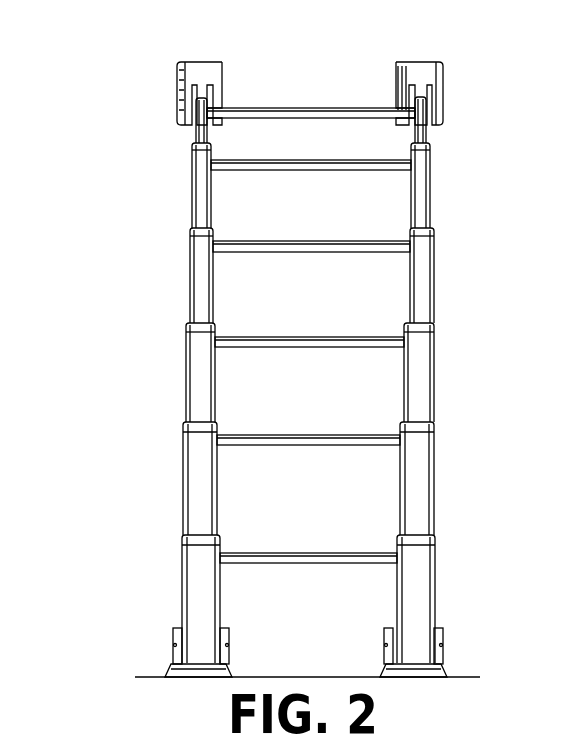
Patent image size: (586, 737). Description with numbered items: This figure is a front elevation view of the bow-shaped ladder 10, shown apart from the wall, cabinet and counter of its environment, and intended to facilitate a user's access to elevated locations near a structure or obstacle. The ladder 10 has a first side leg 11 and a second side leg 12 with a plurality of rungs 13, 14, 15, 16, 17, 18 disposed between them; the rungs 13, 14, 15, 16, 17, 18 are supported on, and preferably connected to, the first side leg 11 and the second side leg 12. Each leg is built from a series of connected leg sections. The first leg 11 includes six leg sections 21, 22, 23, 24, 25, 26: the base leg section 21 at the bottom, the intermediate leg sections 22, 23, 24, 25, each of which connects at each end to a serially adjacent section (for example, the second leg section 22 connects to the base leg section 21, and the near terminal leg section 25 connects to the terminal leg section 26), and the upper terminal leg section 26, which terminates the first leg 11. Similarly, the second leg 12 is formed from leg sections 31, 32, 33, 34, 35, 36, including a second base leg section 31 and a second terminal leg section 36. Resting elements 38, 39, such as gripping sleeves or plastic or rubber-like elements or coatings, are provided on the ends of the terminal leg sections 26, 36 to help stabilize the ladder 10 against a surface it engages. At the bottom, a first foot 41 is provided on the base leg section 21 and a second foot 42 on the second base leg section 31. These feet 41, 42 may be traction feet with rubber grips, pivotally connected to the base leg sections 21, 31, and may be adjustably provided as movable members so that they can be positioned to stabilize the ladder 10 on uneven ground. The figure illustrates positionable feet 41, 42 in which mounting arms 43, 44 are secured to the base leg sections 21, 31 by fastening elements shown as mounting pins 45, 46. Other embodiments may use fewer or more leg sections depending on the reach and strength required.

The ladder 10 is at (167, 250).
The first side leg 11 is at (182, 442).
The second side leg 12 is at (434, 398).
The rung 13 is at (278, 553).
The rung 14 is at (289, 435).
The rung 15 is at (290, 337).
The rung 16 is at (306, 241).
The rung 17 is at (307, 160).
The rung 18 is at (312, 108).
The base leg section 21 is at (195, 578).
The second leg section 22 is at (195, 497).
The intermediate leg section 23 is at (193, 372).
The intermediate leg section 24 is at (200, 286).
The near terminal leg section 25 is at (200, 188).
The terminal leg section 26 is at (195, 135).
The second base leg section 31 is at (413, 585).
The leg section 32 is at (420, 495).
The leg section 33 is at (418, 378).
The leg section 34 is at (425, 288).
The leg section 35 is at (432, 182).
The second terminal leg section 36 is at (425, 132).
The resting element 38 is at (179, 65).
The resting element 39 is at (437, 62).
The first foot 41 is at (172, 667).
The second foot 42 is at (447, 669).
The mounting arm 43 is at (226, 632).
The mounting arm 44 is at (390, 632).
The mounting pin 45 is at (172, 640).
The mounting pin 46 is at (445, 638).